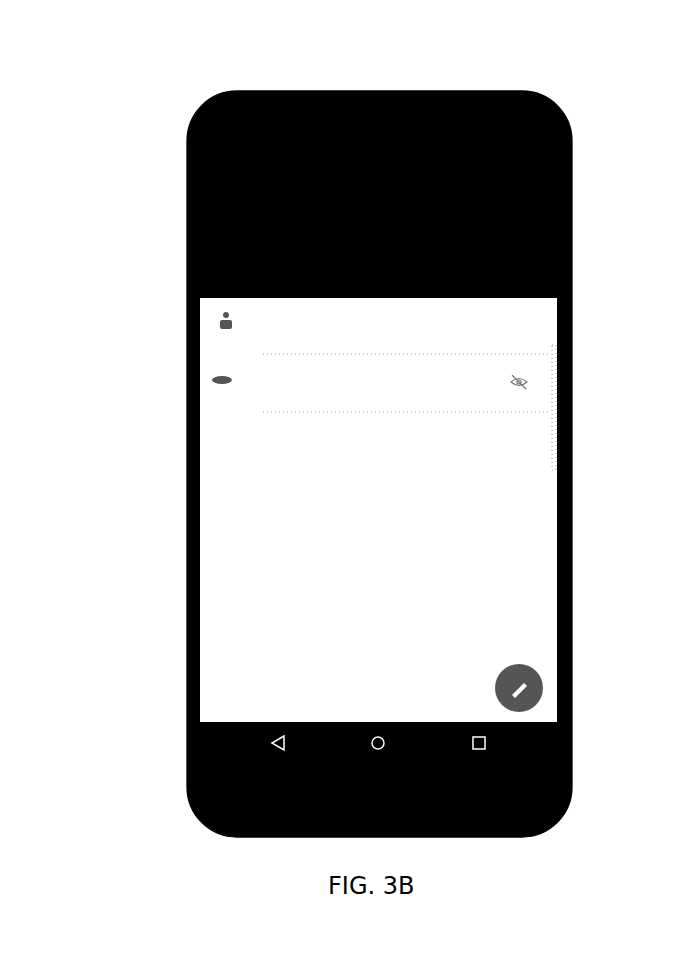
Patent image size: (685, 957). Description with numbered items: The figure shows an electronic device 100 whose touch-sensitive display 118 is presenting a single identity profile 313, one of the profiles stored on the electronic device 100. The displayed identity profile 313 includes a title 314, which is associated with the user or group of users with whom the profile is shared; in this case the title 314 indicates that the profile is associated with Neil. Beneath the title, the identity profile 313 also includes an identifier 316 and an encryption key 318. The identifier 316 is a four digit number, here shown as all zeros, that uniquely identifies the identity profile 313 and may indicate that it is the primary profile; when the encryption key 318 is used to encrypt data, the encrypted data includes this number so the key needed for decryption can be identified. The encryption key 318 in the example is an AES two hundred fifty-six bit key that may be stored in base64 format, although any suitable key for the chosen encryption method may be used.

The electronic device 100 is at (248, 79).
The touch-sensitive display 118 is at (557, 196).
The identity profile 313 is at (522, 285).
The title 314 is at (212, 270).
The identifier 316 is at (219, 325).
The encryption key 318 is at (212, 380).